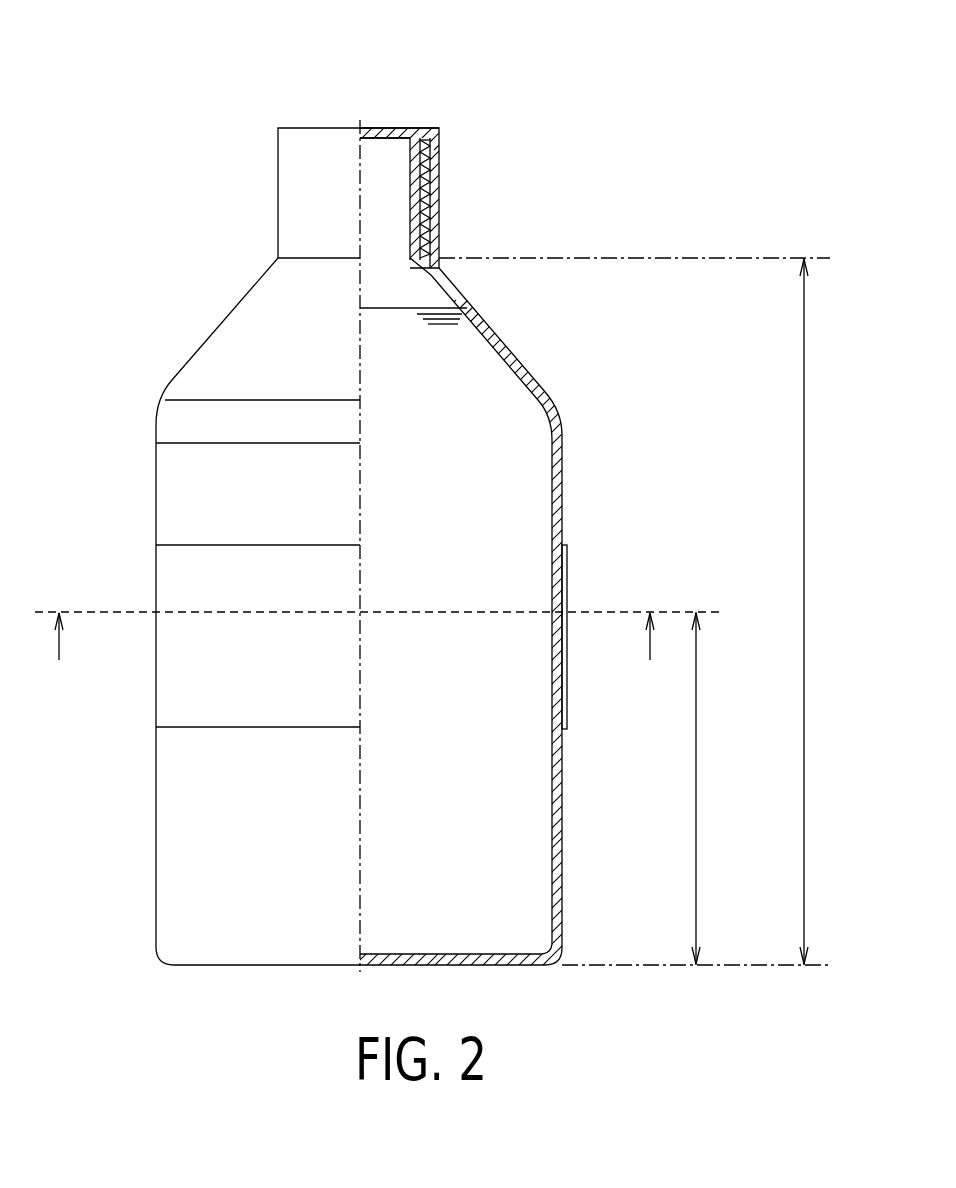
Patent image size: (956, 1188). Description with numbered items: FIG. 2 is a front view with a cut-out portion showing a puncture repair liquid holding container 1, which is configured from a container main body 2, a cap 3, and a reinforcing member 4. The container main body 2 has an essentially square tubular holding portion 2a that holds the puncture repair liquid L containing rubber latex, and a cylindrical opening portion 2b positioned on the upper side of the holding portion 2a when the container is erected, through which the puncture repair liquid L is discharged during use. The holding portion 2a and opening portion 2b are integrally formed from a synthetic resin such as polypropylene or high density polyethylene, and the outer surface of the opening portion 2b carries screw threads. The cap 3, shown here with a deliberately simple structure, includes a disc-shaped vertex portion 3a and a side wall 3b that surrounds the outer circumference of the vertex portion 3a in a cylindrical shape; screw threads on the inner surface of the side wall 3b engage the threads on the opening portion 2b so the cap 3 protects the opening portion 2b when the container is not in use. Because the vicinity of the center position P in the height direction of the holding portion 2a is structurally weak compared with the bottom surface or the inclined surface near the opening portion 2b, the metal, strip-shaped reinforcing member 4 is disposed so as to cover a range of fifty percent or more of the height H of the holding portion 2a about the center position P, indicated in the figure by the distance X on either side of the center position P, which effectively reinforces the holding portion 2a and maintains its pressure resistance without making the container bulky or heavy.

The puncture repair liquid holding container 1 is at (478, 562).
The container main body 2 is at (478, 615).
The holding portion 2a is at (556, 505).
The opening portion 2b is at (420, 222).
The cap 3 is at (350, 157).
The vertex portion 3a is at (383, 128).
The side wall 3b is at (440, 211).
The reinforcing member 4 is at (180, 700).
The puncture repair liquid L is at (493, 360).
The center position P is at (156, 612).
The height H is at (641, 611).
The distance dimension X is at (356, 655).